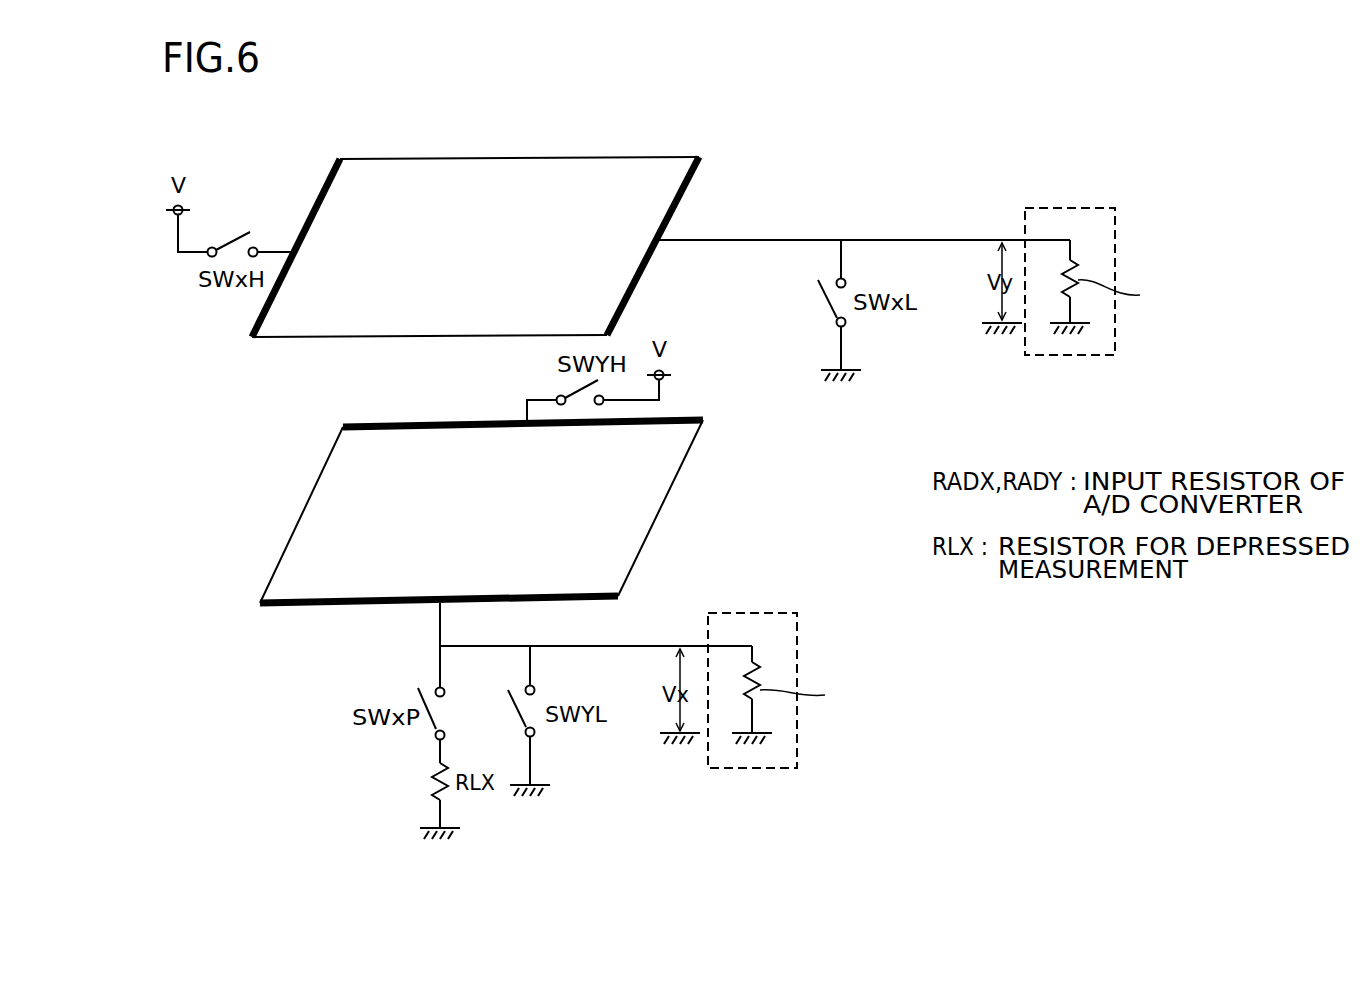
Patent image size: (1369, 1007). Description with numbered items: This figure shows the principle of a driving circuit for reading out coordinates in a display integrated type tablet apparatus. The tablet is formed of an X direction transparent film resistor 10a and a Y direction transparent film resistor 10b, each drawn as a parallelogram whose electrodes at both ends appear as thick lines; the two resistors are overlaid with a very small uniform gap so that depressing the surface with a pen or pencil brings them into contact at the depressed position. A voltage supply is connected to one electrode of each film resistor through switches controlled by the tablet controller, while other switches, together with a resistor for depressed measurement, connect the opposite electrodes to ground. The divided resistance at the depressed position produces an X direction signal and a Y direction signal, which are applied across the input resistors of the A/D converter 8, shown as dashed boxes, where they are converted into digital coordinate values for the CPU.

The X direction transparent film resistor 10a is at (552, 157).
The Y direction transparent film resistor 10b is at (270, 603).
The A/D converter 8 is at (1030, 208).